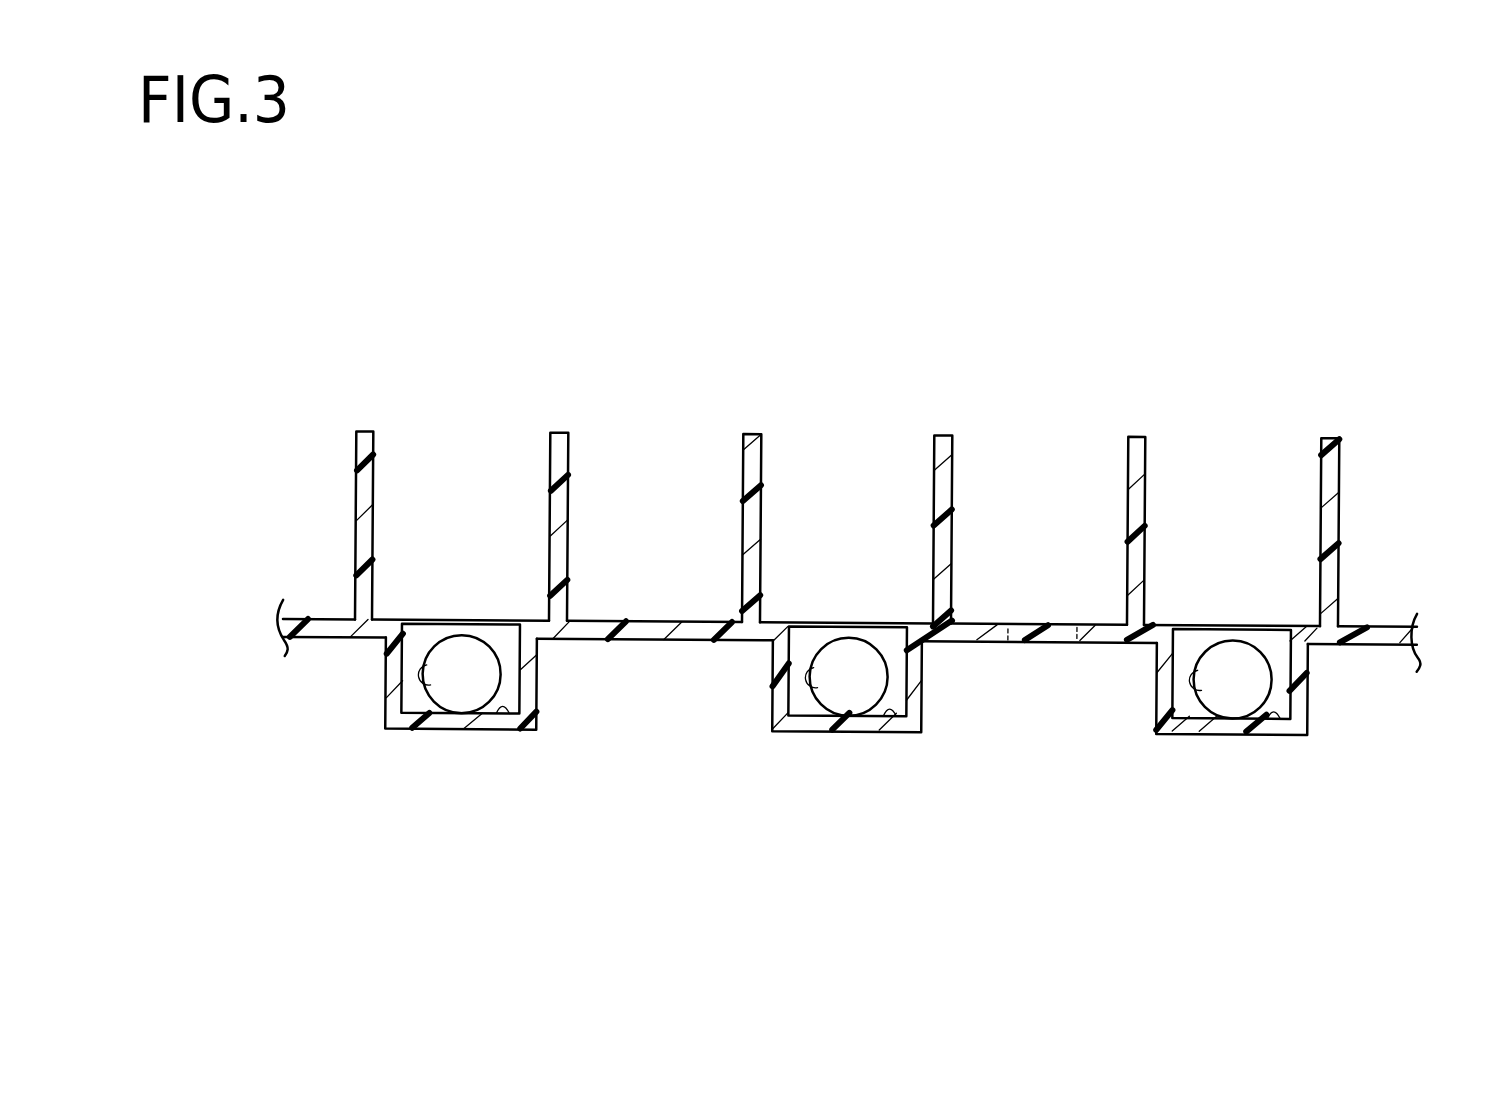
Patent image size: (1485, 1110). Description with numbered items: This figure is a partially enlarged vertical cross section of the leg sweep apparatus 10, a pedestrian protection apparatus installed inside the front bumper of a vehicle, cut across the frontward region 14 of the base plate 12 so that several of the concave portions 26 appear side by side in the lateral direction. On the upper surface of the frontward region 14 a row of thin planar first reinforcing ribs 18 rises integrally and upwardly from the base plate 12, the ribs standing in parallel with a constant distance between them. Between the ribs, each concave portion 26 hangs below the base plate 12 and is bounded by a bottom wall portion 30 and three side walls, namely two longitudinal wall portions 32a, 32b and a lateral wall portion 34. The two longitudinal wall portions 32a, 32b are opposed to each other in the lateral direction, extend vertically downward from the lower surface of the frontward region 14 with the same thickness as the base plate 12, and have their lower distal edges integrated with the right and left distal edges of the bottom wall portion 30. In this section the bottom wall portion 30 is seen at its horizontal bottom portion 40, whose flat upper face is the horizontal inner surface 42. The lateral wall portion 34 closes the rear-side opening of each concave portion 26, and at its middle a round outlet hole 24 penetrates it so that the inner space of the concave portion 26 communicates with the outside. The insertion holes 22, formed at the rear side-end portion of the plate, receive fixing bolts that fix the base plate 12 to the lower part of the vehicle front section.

The leg sweep apparatus 10 is at (1030, 372).
The base plate 12 is at (849, 545).
The frontward region 14 is at (664, 622).
The first reinforcing ribs 18 is at (360, 496).
The insertion holes 22 is at (1018, 624).
The outlet hole 24 is at (388, 728).
The concave portion 26 is at (470, 732).
The bottom wall portion 30 is at (806, 753).
The horizontal bottom portion 40 is at (1208, 728).
The longitudinal wall portion 32a is at (393, 677).
The longitudinal wall portion 32b is at (533, 681).
The lateral wall portion 34 is at (422, 636).
The horizontal inner surface 42 is at (501, 709).